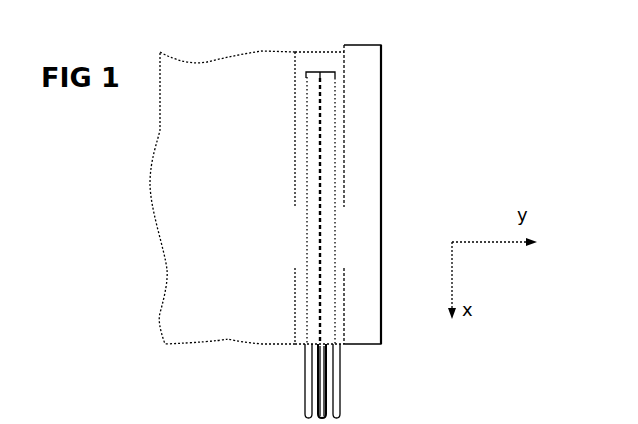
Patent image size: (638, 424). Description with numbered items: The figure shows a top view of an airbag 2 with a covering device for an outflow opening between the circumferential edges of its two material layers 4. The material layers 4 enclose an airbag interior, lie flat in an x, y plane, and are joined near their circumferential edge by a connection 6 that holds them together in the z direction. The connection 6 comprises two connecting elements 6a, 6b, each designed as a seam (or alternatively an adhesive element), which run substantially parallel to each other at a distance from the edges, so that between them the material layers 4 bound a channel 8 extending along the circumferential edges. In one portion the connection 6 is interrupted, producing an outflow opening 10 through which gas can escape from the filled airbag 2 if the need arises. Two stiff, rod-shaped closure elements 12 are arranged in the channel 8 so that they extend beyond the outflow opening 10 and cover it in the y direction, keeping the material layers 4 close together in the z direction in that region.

The airbag 2 is at (397, 55).
The material layers 4 is at (222, 197).
The connection 6 is at (291, 298).
The connecting element 6a is at (293, 107).
The connecting element 6b is at (346, 97).
The channel 8 is at (320, 68).
The outflow opening 10 is at (345, 240).
The closure elements 12 is at (305, 393).